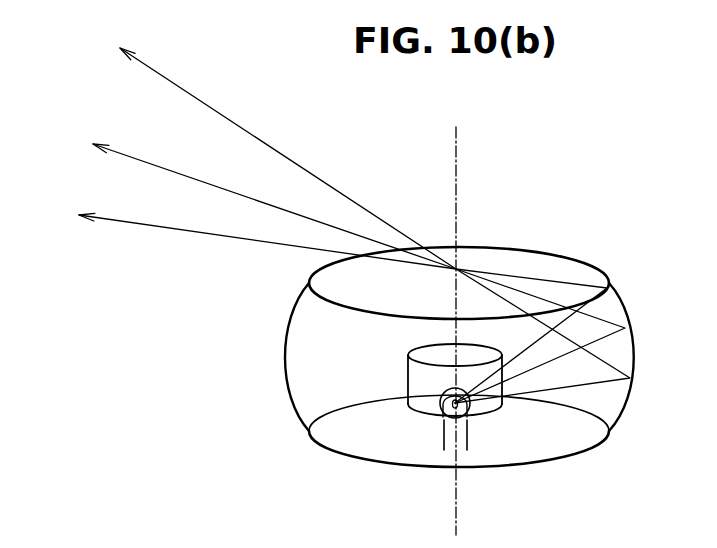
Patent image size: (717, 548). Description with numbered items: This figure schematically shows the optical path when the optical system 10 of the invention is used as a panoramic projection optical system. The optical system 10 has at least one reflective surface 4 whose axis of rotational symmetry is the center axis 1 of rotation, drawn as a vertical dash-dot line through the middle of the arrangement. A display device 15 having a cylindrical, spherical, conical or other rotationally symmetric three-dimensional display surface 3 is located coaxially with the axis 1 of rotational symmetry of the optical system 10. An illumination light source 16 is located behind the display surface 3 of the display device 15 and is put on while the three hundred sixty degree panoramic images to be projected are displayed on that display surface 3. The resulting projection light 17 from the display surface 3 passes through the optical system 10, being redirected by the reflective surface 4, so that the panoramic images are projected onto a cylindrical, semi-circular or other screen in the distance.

The center axis of rotation 1 is at (458, 172).
The three-dimensional display surface 3 is at (406, 380).
The reflective surface 4 is at (634, 365).
The optical system 10 is at (268, 388).
The display device 15 is at (418, 415).
The illumination light source 16 is at (479, 465).
The projection light 17 is at (260, 140).